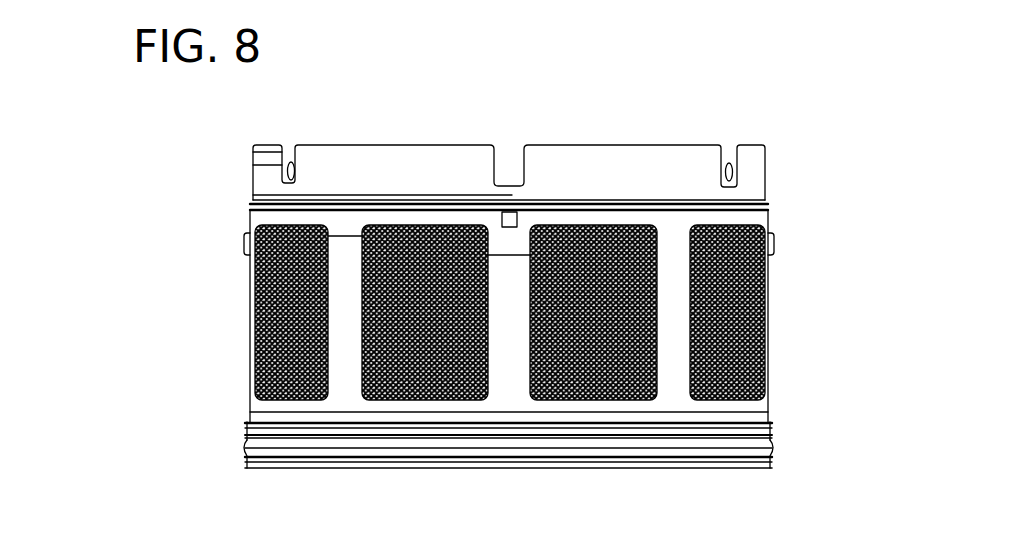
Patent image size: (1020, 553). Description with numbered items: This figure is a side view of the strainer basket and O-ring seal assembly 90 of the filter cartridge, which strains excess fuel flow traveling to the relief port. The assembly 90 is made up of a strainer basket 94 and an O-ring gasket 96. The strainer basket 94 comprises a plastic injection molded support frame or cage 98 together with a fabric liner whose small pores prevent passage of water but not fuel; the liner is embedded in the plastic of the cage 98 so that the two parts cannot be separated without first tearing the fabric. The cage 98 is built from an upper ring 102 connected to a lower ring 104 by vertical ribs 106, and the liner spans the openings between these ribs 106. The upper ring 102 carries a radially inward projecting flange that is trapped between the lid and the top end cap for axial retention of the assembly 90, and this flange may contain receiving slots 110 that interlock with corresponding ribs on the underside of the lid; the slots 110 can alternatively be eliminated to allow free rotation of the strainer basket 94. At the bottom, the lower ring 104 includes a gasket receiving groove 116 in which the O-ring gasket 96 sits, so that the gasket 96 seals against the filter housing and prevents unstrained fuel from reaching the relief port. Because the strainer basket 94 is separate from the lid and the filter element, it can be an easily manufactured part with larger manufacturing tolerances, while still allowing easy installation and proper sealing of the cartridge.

The strainer basket and O-ring seal assembly 90 is at (228, 295).
The strainer basket 94 is at (228, 320).
The O-ring gasket 96 is at (508, 477).
The cage 98 is at (753, 180).
The upper ring 102 is at (767, 188).
The lower ring 104 is at (767, 433).
The vertical ribs 106 is at (513, 373).
The receiving slots 110 is at (290, 158).
The gasket receiving groove 116 is at (767, 460).